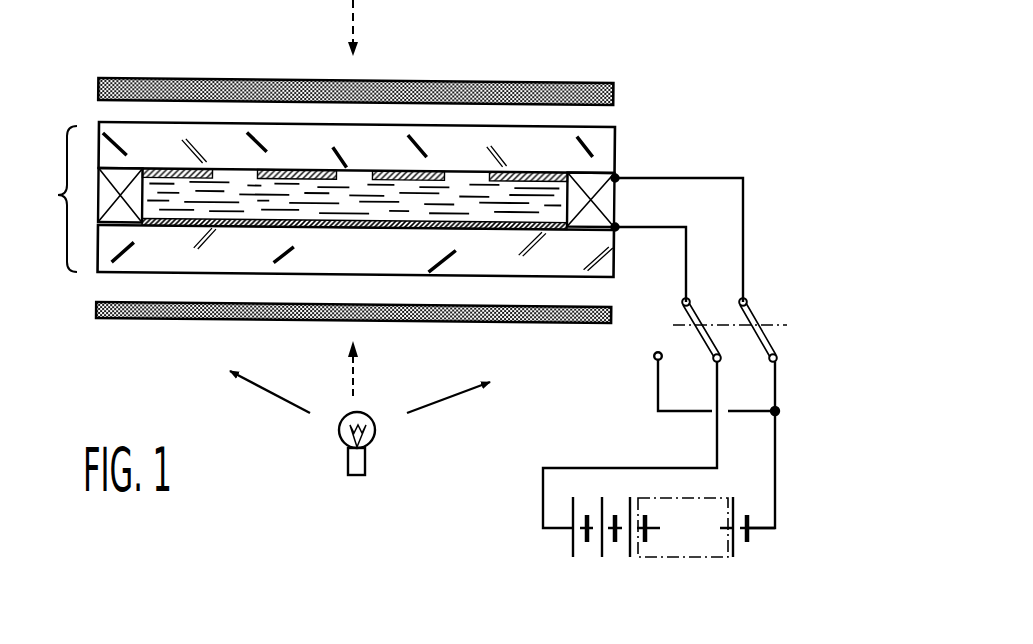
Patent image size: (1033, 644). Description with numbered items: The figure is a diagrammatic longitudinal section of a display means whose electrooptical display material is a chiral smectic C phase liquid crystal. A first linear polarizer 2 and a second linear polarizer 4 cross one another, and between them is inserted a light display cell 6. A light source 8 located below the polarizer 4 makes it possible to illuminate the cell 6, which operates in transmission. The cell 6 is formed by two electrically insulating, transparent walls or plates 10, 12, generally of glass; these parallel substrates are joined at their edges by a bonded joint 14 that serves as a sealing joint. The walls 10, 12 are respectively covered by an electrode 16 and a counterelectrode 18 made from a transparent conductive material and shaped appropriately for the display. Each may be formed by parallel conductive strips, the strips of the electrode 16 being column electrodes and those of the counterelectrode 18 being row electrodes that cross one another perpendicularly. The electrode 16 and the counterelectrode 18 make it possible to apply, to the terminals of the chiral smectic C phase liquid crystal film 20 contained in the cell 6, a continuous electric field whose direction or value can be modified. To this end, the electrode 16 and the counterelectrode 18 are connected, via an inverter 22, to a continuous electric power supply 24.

The first linear polarizer 2 is at (447, 93).
The second linear polarizer 4 is at (98, 309).
The light display cell 6 is at (51, 199).
The light source 8 is at (365, 463).
The wall 10 is at (613, 133).
The wall 12 is at (507, 260).
The bonded joint 14 is at (122, 172).
The electrode 16 is at (221, 168).
The counterelectrode 18 is at (247, 228).
The chiral smectic C phase liquid crystal film 20 is at (543, 201).
The inverter 22 is at (766, 309).
The continuous electric power supply 24 is at (694, 566).